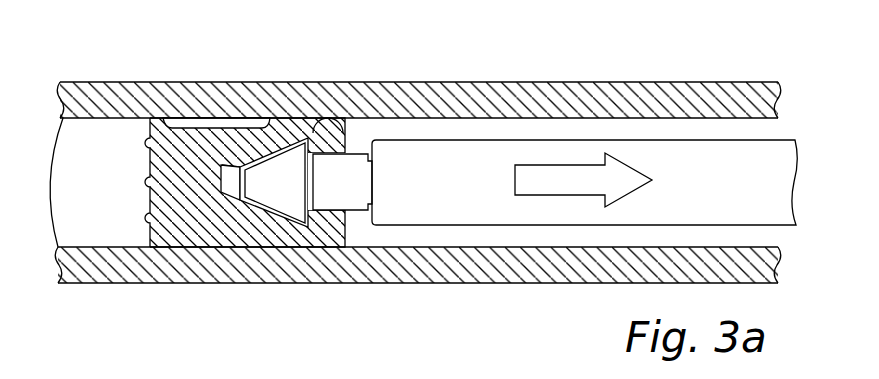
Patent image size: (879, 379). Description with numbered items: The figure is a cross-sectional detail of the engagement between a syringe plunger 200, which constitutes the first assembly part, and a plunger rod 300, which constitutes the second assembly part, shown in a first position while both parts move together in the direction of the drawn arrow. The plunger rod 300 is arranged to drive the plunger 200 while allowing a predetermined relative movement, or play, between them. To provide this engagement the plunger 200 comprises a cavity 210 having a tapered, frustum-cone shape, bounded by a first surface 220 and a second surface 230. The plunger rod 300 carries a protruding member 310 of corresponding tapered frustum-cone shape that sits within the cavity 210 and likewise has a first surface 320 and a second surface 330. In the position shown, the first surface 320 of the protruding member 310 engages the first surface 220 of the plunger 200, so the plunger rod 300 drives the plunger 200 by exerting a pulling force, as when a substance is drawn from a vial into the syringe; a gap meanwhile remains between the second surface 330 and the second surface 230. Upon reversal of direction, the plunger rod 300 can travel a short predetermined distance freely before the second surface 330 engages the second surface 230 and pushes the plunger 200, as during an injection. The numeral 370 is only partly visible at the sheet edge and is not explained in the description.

The plunger 200 is at (320, 117).
The cavity 210 is at (224, 180).
The first surface 220 is at (334, 118).
The second surface 230 is at (222, 182).
The plunger rod 300 is at (588, 152).
The protruding member 310 is at (287, 188).
The first surface 320 is at (308, 212).
The second surface 330 is at (240, 187).
The lumen 370 is at (405, 5).